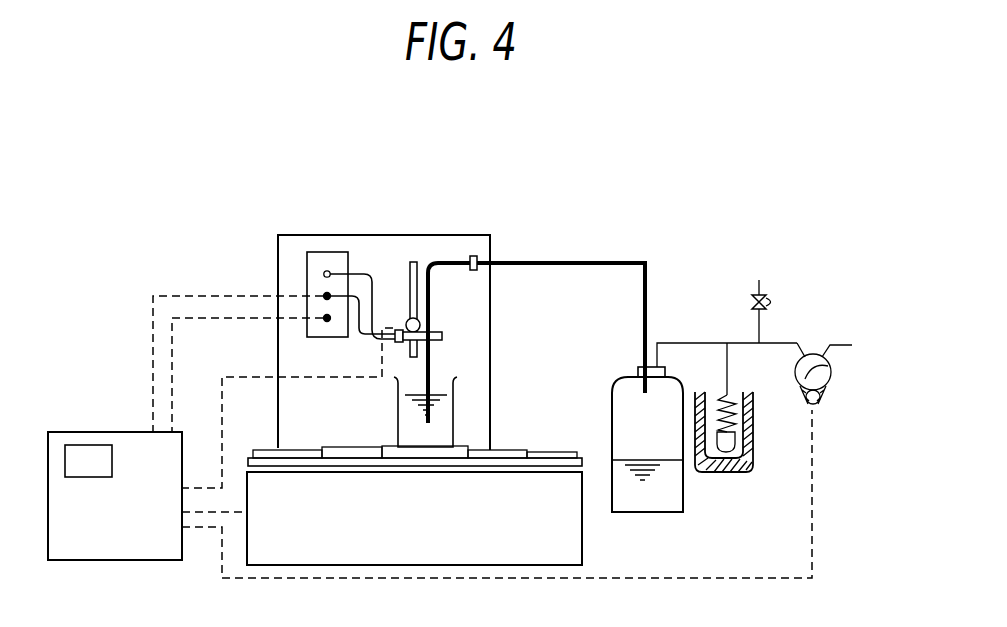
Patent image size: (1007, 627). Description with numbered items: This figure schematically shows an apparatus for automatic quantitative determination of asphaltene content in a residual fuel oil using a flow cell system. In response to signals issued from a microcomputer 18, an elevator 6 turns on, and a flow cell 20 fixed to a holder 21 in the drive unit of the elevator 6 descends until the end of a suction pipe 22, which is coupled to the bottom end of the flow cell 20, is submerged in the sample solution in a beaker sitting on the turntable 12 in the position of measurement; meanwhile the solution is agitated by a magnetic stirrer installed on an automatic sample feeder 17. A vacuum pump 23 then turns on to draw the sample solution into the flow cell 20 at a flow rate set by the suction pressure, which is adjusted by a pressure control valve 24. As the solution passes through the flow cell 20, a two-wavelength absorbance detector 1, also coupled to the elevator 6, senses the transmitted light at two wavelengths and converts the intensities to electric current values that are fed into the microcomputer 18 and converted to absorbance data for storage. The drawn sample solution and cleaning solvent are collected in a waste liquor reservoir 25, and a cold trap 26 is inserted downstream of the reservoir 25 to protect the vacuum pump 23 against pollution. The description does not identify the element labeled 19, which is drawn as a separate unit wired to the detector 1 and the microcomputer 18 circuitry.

The two-wavelength absorbance detector 1 is at (328, 252).
The elevator 6 is at (388, 248).
The turntable 12 is at (540, 460).
The automatic sample feeder 17 is at (550, 543).
The microcomputer 18 is at (482, 437).
The recorder 19 is at (82, 455).
The flow cell 20 is at (436, 328).
The holder 21 is at (442, 336).
The suction pipe 22 is at (428, 368).
The vacuum pump 23 is at (832, 372).
The pressure control valve 24 is at (762, 282).
The waste liquor reservoir 25 is at (667, 501).
The cold trap 26 is at (735, 432).